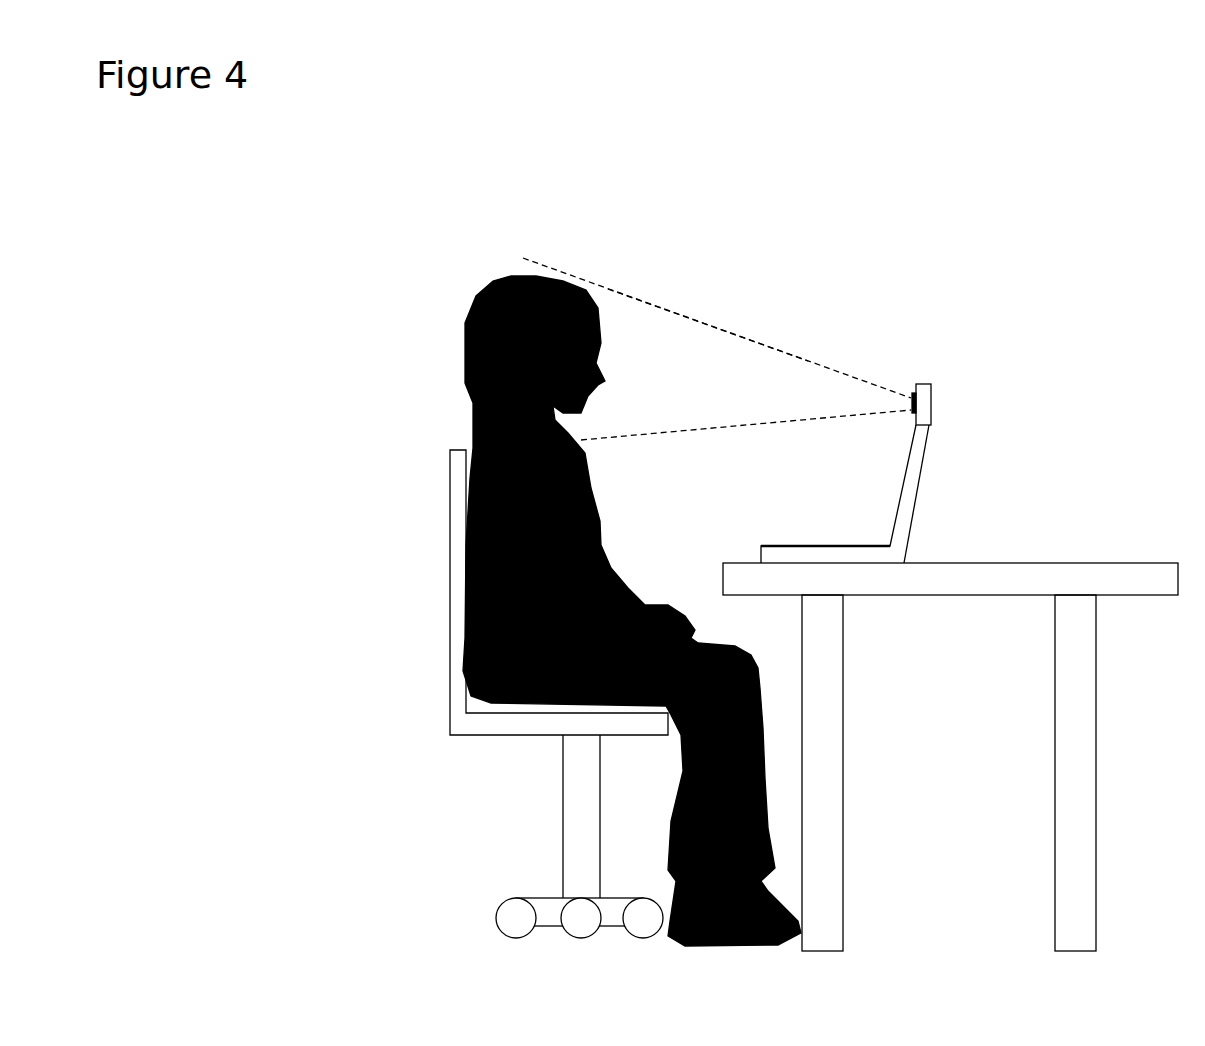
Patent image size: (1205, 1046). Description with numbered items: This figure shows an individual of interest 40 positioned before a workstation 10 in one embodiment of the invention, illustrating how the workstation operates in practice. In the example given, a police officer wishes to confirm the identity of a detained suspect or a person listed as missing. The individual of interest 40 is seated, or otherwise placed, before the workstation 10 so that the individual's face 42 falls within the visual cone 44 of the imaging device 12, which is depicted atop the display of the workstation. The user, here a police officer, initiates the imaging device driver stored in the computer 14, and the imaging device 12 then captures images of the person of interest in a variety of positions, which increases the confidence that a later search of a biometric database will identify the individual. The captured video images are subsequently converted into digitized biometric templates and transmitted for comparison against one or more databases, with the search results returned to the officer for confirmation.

The workstation 10 is at (1060, 488).
The imaging device 12 is at (930, 393).
The computer 14 is at (917, 468).
The individual of interest 40 is at (603, 505).
The face 42 is at (567, 280).
The visual cone 44 is at (723, 340).